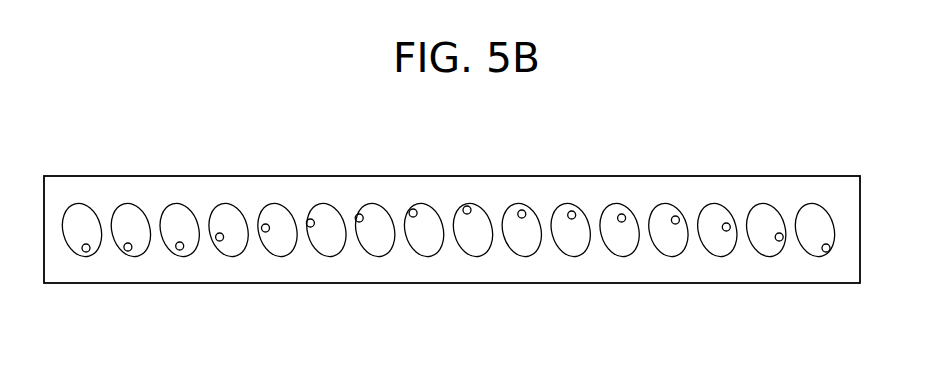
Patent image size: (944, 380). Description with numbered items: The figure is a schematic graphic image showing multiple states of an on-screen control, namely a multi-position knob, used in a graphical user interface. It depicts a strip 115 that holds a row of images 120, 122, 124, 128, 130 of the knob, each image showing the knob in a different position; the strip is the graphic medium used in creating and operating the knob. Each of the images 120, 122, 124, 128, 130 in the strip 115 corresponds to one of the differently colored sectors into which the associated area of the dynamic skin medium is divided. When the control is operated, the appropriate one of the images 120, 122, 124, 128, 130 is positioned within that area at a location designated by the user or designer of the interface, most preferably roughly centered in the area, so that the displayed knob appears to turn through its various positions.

The strip 115 is at (328, 192).
The image of knob 130 is at (82, 215).
The image of knob 128 is at (127, 217).
The image of knob 124 is at (720, 248).
The image of knob 122 is at (763, 213).
The image of knob 120 is at (810, 218).